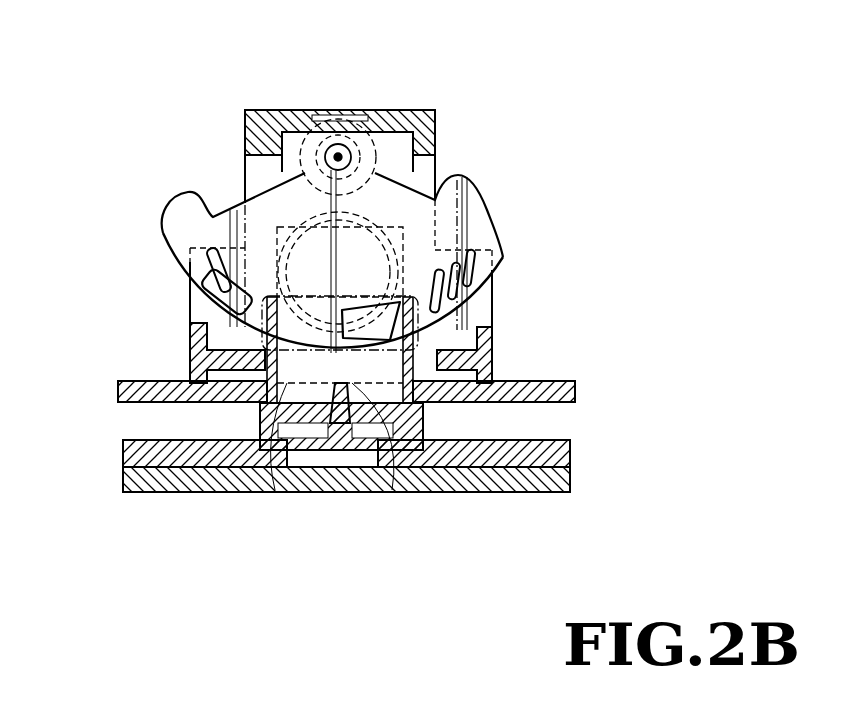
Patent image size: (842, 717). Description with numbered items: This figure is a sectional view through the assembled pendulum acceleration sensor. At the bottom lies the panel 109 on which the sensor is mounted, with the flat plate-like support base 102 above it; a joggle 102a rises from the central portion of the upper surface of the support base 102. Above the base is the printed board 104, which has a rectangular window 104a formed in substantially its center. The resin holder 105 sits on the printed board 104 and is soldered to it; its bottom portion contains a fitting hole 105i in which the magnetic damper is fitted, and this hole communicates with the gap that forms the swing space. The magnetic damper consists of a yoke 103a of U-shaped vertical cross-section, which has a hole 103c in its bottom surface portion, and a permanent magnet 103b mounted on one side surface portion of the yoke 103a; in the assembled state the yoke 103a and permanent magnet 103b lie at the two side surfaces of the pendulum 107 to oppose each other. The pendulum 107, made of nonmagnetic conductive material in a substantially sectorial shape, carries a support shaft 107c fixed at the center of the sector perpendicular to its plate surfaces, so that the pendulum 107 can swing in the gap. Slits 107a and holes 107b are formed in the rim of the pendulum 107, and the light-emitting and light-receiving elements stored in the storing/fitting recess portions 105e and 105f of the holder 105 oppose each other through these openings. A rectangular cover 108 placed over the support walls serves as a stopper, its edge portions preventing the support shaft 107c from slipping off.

The support base 102 is at (572, 455).
The joggle 102a is at (378, 450).
The yoke 103a is at (405, 233).
The permanent magnet 103b is at (307, 222).
The hole 103c is at (312, 437).
The printed board 104 is at (575, 392).
The rectangular window 104a is at (283, 437).
The holder 105 is at (503, 350).
The storing/fitting recess portion 105e is at (188, 254).
The storing/fitting recess portion 105f is at (493, 266).
The fitting hole 105i is at (427, 360).
The pendulum 107 is at (480, 186).
The slit 107a is at (468, 313).
The slit 107b is at (196, 283).
The support shaft 107c is at (338, 153).
The cover 108 is at (402, 110).
The panel 109 is at (226, 491).